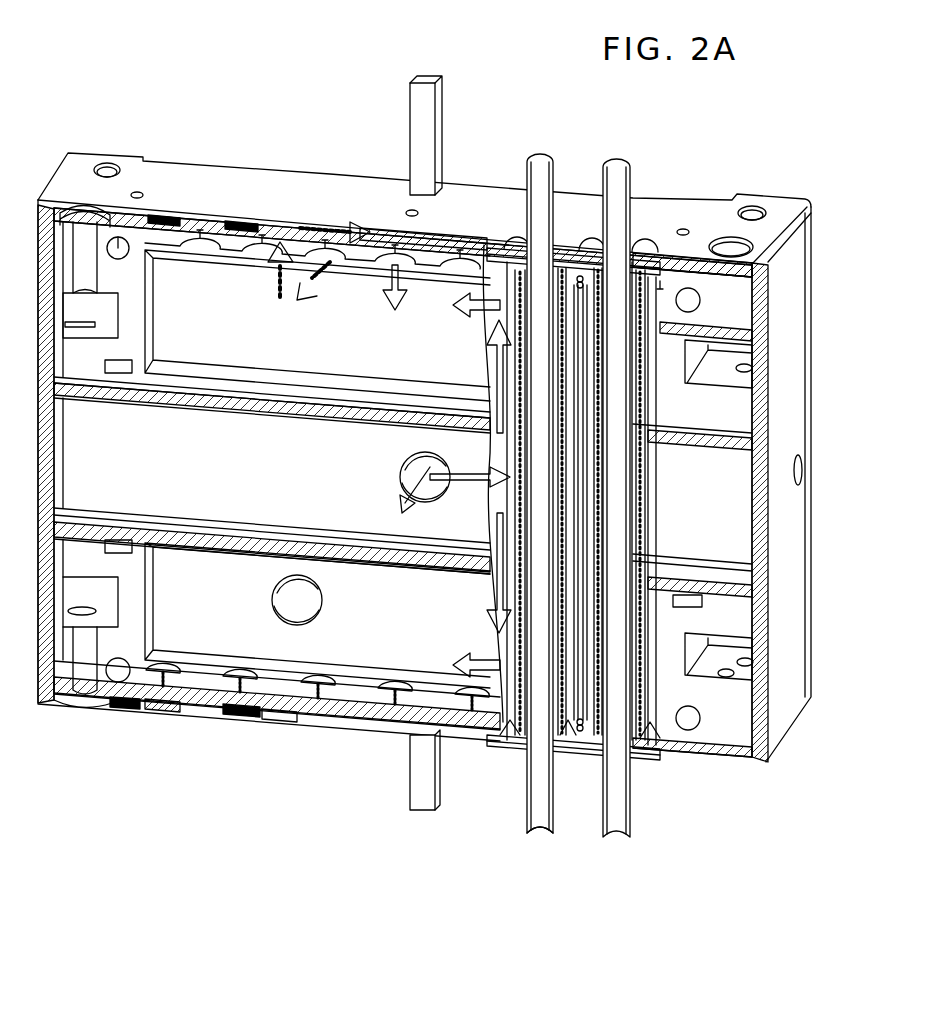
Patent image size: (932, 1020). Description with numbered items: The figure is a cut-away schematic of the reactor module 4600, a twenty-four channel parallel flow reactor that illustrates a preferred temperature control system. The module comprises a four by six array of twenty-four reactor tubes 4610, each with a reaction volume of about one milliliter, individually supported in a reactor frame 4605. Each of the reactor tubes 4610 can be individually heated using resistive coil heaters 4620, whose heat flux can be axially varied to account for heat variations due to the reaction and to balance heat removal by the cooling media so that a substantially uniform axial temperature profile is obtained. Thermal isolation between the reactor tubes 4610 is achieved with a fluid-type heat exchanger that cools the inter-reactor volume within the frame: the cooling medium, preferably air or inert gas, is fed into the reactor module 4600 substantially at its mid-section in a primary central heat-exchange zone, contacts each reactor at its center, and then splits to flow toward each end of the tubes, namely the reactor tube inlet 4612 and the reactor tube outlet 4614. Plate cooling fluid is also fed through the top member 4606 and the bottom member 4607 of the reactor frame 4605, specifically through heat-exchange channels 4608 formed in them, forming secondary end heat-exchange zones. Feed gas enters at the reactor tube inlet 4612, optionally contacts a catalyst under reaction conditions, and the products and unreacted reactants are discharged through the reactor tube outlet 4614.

The reactor module 4600 is at (814, 154).
The reactor frame 4605 is at (797, 507).
The top member 4606 is at (212, 214).
The bottom member 4607 is at (193, 707).
The heat-exchange channels 4608 is at (165, 212).
The reactor tubes 4610 is at (557, 168).
The reactor tube inlet 4612 is at (540, 148).
The reactor tube outlet 4614 is at (540, 834).
The resistive coil heaters 4620 is at (753, 332).